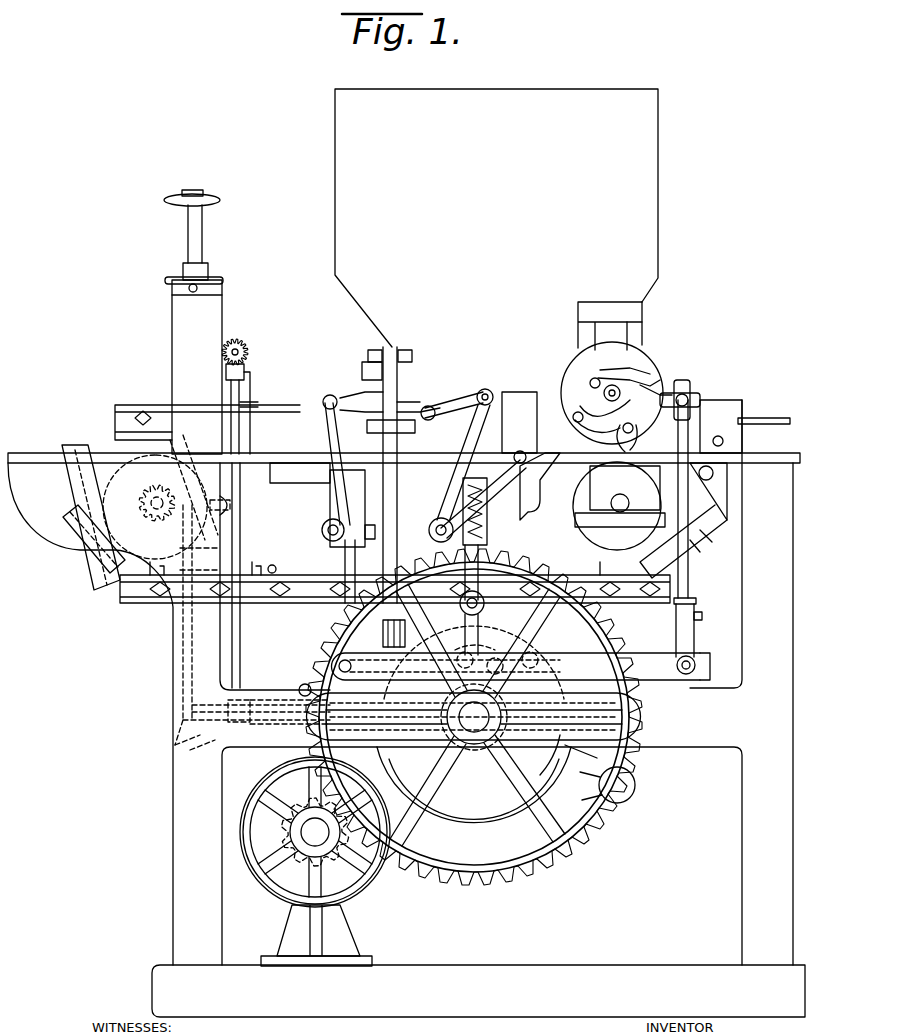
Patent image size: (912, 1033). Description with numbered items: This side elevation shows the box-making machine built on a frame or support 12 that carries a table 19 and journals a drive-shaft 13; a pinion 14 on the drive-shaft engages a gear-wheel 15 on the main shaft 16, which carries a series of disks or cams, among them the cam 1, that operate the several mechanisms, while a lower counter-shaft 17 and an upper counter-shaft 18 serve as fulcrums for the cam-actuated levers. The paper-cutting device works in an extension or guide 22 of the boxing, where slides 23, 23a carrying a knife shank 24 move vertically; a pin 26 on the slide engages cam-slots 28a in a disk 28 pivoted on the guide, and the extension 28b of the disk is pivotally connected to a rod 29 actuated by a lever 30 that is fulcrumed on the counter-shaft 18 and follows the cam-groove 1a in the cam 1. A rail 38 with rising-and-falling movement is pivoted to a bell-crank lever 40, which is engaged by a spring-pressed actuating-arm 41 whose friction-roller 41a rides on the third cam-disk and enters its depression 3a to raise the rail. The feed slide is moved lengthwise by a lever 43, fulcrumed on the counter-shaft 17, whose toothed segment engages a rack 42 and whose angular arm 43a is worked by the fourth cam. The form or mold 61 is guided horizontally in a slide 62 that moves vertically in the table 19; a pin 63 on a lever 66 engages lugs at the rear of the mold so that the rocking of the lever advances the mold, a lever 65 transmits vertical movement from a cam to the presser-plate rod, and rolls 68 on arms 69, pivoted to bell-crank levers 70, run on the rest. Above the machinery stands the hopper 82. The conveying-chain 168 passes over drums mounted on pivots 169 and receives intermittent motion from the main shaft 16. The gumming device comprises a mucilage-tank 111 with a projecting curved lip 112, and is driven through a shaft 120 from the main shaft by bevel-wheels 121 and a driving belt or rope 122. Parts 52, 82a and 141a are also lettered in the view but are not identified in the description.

The cam 1 is at (474, 724).
The cam-groove 1a is at (488, 648).
The depression 3a is at (520, 640).
The frame or support 12 is at (406, 708).
The drive-shaft 13 is at (314, 832).
The pinion 14 is at (290, 880).
The gear-wheel 15 is at (522, 868).
The main shaft 16 is at (474, 717).
The lower counter-shaft 17 is at (635, 787).
The upper counter-shaft 18 is at (294, 684).
The table 19 is at (284, 456).
The extension or guide 22 is at (586, 318).
The slide 23 is at (618, 334).
The slide 23a is at (636, 428).
The shank 24 is at (594, 384).
The pin 26 is at (615, 380).
The disk 28 is at (601, 416).
The cam-slots 28a is at (668, 392).
The extension 28b is at (700, 398).
The rod 29 is at (686, 570).
The lever 30 is at (525, 650).
The rail 38 is at (720, 420).
The bell-crank lever 40 is at (535, 452).
The actuating-arm 41 is at (487, 498).
The friction-roller 41a is at (458, 623).
The rack 42 is at (383, 635).
The lever 43 is at (494, 473).
The angular arm 43a is at (568, 760).
The slide 52 is at (348, 536).
The form or mold 61 is at (410, 404).
The slide 62 is at (380, 452).
The pin 63 is at (368, 355).
The lever 65 is at (455, 663).
The lever 66 is at (362, 373).
The rods or rolls 68 is at (406, 435).
The arms 69 is at (455, 400).
The bell-crank levers 70 is at (328, 484).
The hopper 82 is at (496, 218).
The chute 82a is at (348, 557).
The mucilage-tank 111 is at (193, 322).
The curved lip 112 is at (620, 503).
The shaft 120 is at (242, 650).
The bevel-wheels 121 is at (245, 725).
The driving belt or rope 122 is at (290, 730).
The lug 141a is at (228, 507).
The chain 168 is at (140, 435).
The pivots 169 is at (640, 525).